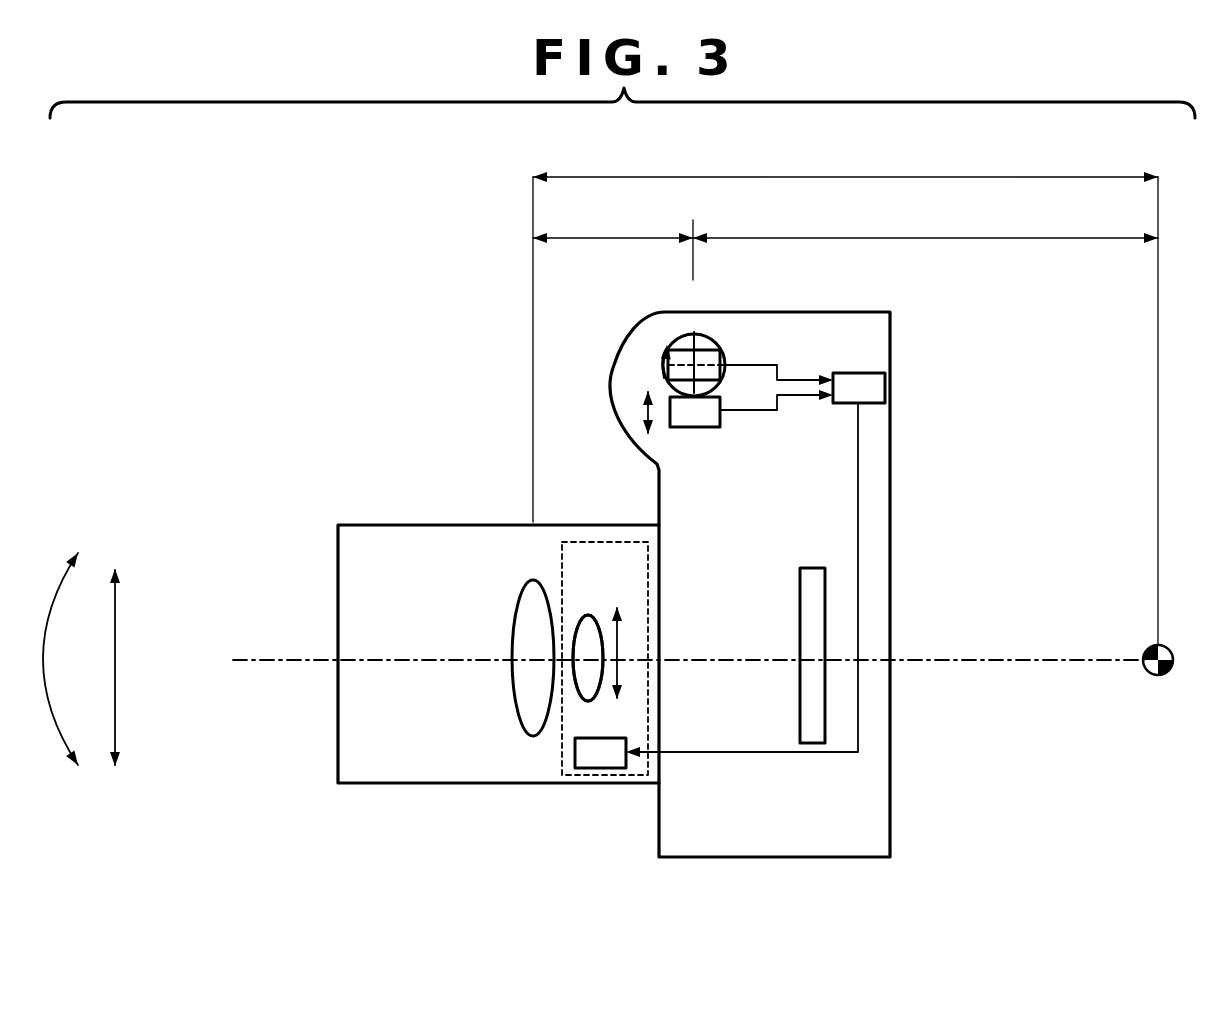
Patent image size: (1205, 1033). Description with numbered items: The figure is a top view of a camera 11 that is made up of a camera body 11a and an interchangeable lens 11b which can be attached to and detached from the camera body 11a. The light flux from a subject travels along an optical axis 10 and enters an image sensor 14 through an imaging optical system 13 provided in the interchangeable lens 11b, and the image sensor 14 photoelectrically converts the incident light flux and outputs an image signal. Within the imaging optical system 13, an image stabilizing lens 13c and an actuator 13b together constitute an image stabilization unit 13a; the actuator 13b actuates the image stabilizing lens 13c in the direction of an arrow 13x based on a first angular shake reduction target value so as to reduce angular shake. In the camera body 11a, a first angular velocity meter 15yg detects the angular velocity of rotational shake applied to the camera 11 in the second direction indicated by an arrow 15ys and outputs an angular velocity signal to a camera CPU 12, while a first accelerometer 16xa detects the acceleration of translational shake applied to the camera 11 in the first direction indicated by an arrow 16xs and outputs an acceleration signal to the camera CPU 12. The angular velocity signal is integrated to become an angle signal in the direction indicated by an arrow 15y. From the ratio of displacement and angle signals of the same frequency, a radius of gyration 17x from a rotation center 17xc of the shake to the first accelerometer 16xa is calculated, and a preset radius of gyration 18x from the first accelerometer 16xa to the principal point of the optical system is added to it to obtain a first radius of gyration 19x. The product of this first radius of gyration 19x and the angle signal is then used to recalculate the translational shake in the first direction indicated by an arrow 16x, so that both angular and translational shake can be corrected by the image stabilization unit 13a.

The optical axis 10 is at (262, 662).
The camera 11 is at (410, 339).
The camera body 11a is at (860, 312).
The interchangeable lens 11b is at (380, 525).
The camera CPU 12 is at (890, 386).
The imaging optical system 13 is at (607, 580).
The image stabilization unit 13a is at (560, 748).
The actuator 13b is at (615, 768).
The image stabilizing lens 13c is at (600, 702).
The arrow 13x is at (618, 640).
The image sensor 14 is at (826, 702).
The arrow 15y is at (80, 548).
The first angular velocity meter 15yg is at (667, 377).
The arrow 15ys is at (696, 333).
The arrow 16x is at (118, 568).
The first accelerometer 16xa is at (704, 427).
The arrow 16xs is at (645, 413).
The radius of gyration 17x is at (880, 238).
The rotation center 17xc is at (1146, 672).
The preset radius of gyration 18x is at (590, 238).
The first radius of gyration 19x is at (826, 177).